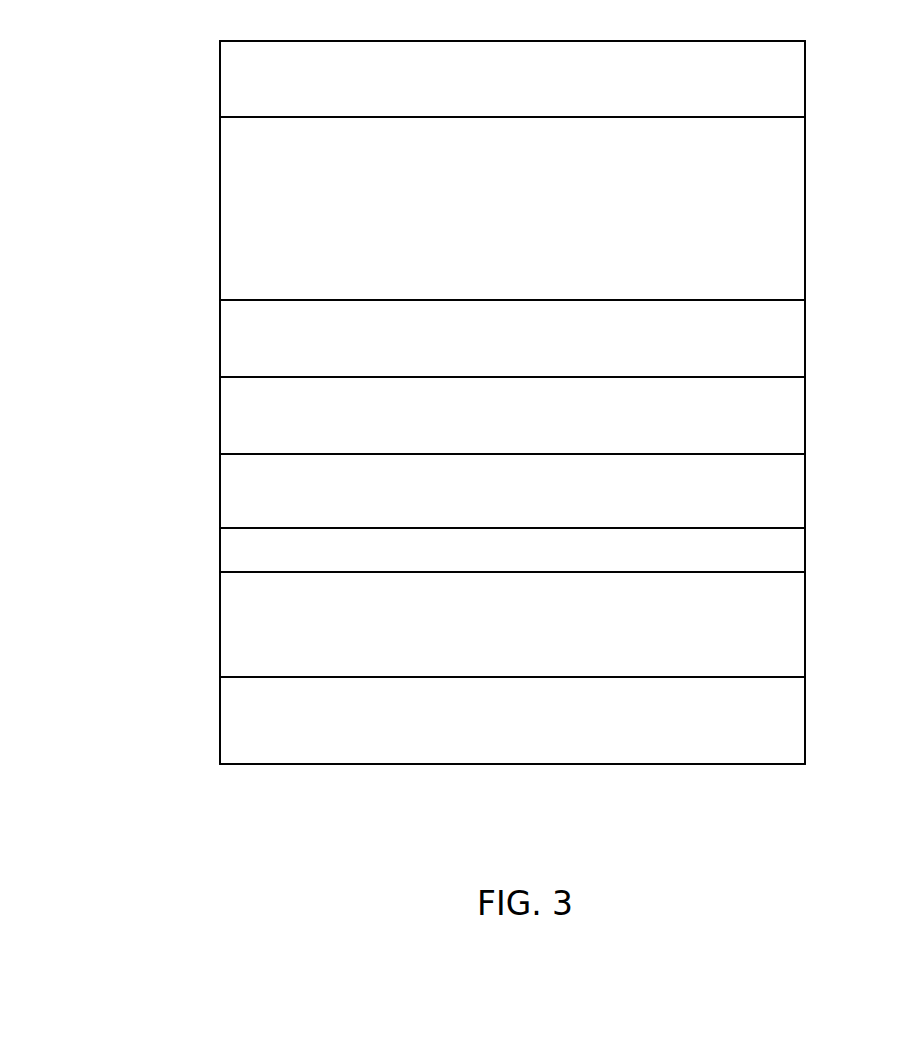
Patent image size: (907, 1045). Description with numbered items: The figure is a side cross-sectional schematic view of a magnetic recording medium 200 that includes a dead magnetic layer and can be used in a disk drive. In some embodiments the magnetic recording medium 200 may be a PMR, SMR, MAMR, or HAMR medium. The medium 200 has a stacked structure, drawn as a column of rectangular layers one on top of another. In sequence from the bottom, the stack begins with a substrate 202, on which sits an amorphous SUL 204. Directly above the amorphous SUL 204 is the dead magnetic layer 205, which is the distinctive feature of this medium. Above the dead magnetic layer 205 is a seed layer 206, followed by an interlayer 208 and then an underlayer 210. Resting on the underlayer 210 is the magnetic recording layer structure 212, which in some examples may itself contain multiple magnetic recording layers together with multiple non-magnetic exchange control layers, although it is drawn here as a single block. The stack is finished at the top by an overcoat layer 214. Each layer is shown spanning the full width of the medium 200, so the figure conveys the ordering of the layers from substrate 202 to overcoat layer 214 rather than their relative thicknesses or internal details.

The magnetic recording medium 200 is at (174, 88).
The substrate 202 is at (805, 719).
The amorphous SUL 204 is at (805, 612).
The dead magnetic layer 205 is at (805, 545).
The seed layer 206 is at (805, 490).
The interlayer 208 is at (805, 426).
The underlayer 210 is at (805, 332).
The magnetic recording layer structure 212 is at (805, 218).
The overcoat layer 214 is at (805, 76).